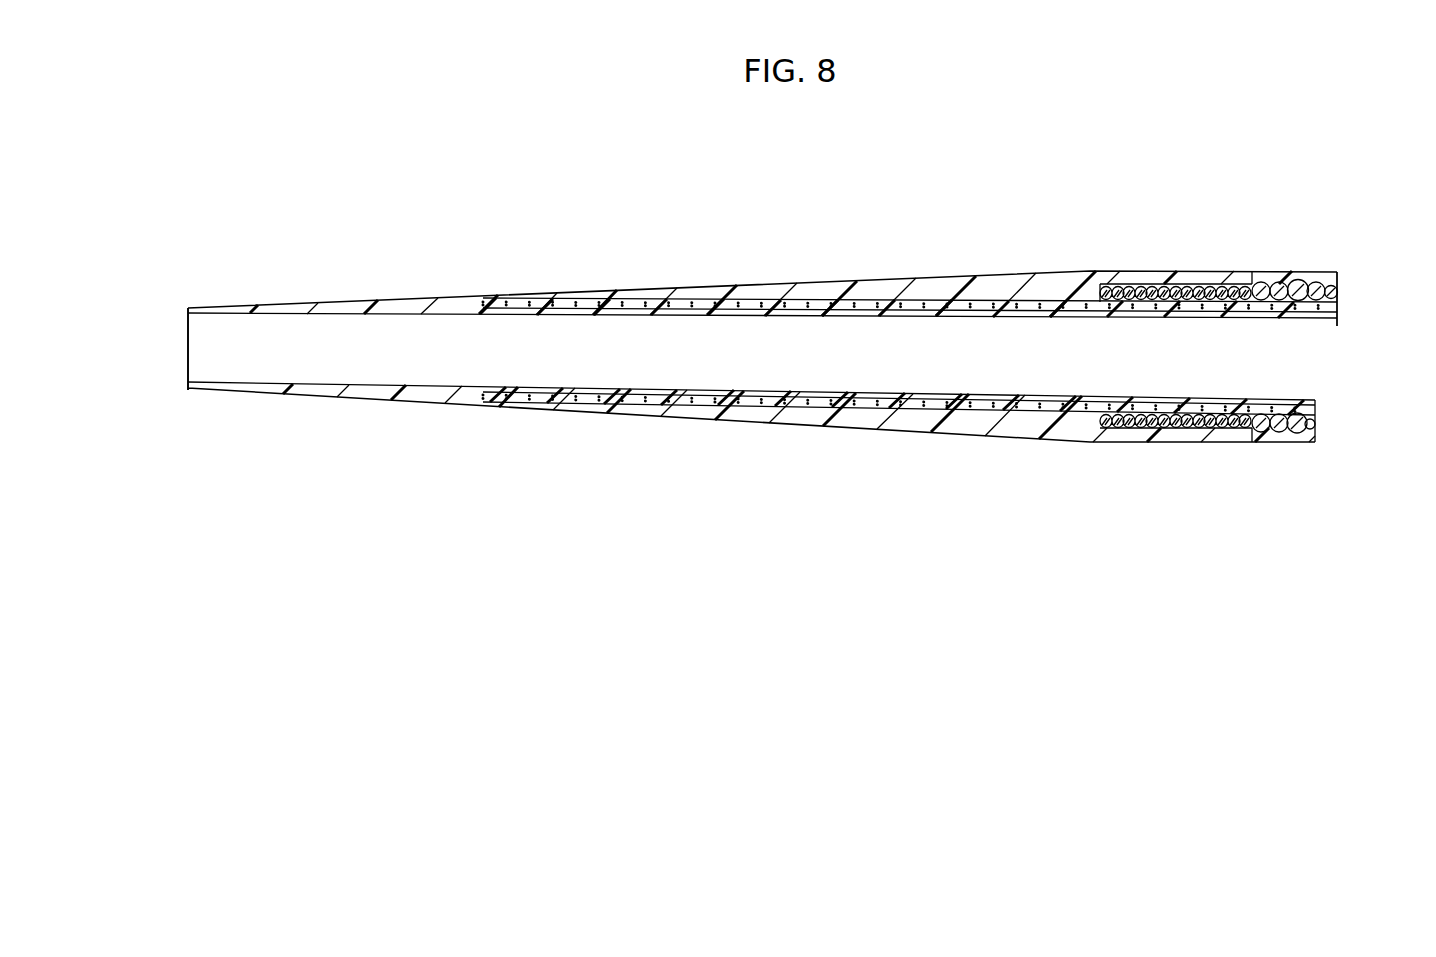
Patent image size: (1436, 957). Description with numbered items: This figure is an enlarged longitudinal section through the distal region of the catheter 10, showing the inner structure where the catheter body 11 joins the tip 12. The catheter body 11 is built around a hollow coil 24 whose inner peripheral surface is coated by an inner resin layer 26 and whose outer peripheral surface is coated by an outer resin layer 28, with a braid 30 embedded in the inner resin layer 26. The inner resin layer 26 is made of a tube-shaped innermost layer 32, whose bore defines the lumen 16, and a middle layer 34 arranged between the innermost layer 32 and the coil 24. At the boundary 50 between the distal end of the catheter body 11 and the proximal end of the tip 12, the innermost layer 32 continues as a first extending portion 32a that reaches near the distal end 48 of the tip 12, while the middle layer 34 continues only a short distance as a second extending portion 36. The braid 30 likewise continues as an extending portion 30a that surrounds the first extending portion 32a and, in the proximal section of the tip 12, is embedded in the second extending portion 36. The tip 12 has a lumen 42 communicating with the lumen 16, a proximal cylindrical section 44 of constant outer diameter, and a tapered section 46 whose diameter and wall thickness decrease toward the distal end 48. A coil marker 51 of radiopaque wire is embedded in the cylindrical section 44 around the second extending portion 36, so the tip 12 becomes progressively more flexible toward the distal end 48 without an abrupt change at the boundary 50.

The catheter 10 is at (998, 161).
The catheter body 11 is at (1268, 272).
The tip 12 is at (606, 418).
The lumen 16 is at (1292, 398).
The coil 24 is at (1313, 277).
The inner resin layer 26 is at (1343, 262).
The outer resin layer 28 is at (1268, 432).
The braid 30 is at (747, 303).
The extending portion 30a is at (692, 398).
The innermost layer 32 is at (1336, 315).
The first inner-layer extending portion 32a is at (910, 312).
The middle layer 34 is at (1336, 306).
The second inner-layer extending portion 36 is at (1104, 290).
The lumen 42 is at (398, 318).
The cylindrical section 44 is at (1131, 283).
The tapered section 46 is at (845, 292).
The distal end 48 is at (188, 308).
The boundary 50 is at (1243, 290).
The coil marker 51 is at (1208, 284).